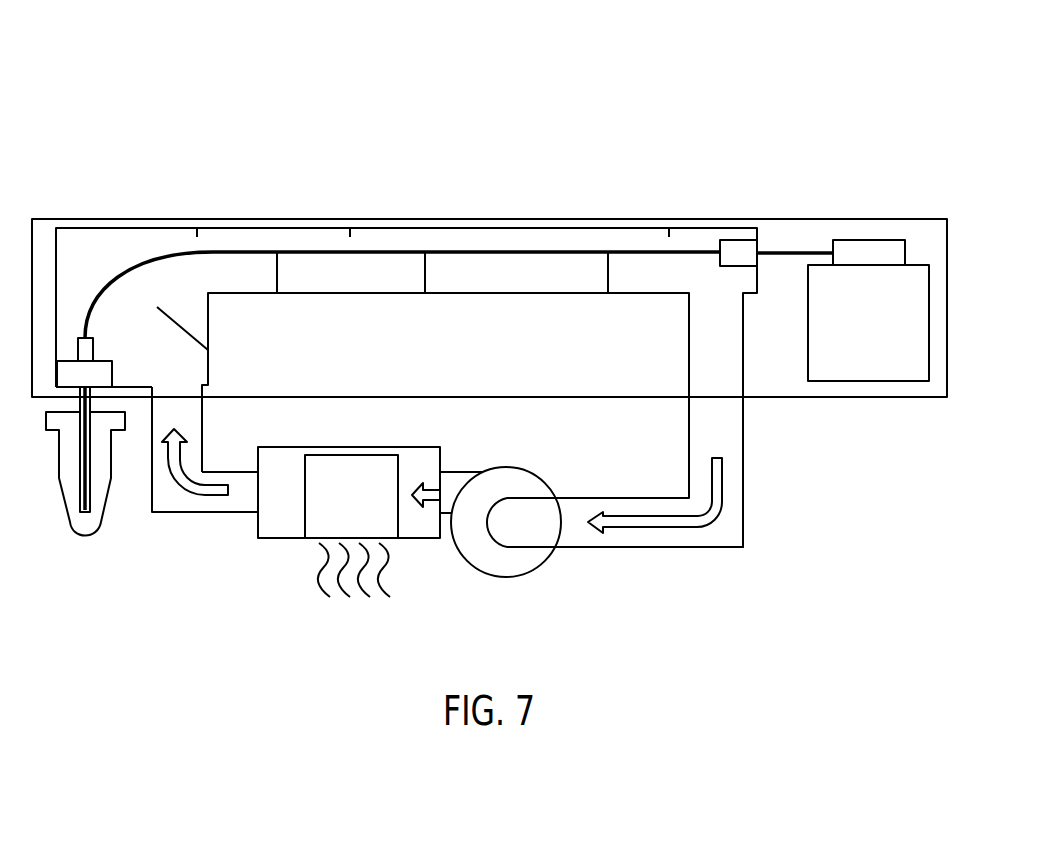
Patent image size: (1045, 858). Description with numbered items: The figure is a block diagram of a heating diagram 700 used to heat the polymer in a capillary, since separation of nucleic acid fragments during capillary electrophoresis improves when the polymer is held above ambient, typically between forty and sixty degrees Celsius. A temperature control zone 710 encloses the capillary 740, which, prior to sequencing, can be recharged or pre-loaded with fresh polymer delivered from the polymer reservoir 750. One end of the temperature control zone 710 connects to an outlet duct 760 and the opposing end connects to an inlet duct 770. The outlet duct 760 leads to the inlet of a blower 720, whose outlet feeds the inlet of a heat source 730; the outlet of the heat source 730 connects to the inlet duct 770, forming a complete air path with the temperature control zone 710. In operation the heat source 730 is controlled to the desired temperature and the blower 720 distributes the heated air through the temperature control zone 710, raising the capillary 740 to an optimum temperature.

The heating diagram 700 is at (255, 76).
The temperature control zone 710 is at (755, 247).
The blower 720 is at (510, 570).
The heat source 730 is at (313, 533).
The capillary 740 is at (238, 252).
The polymer reservoir 750 is at (883, 382).
The outlet duct 760 is at (732, 497).
The inlet duct 770 is at (163, 507).